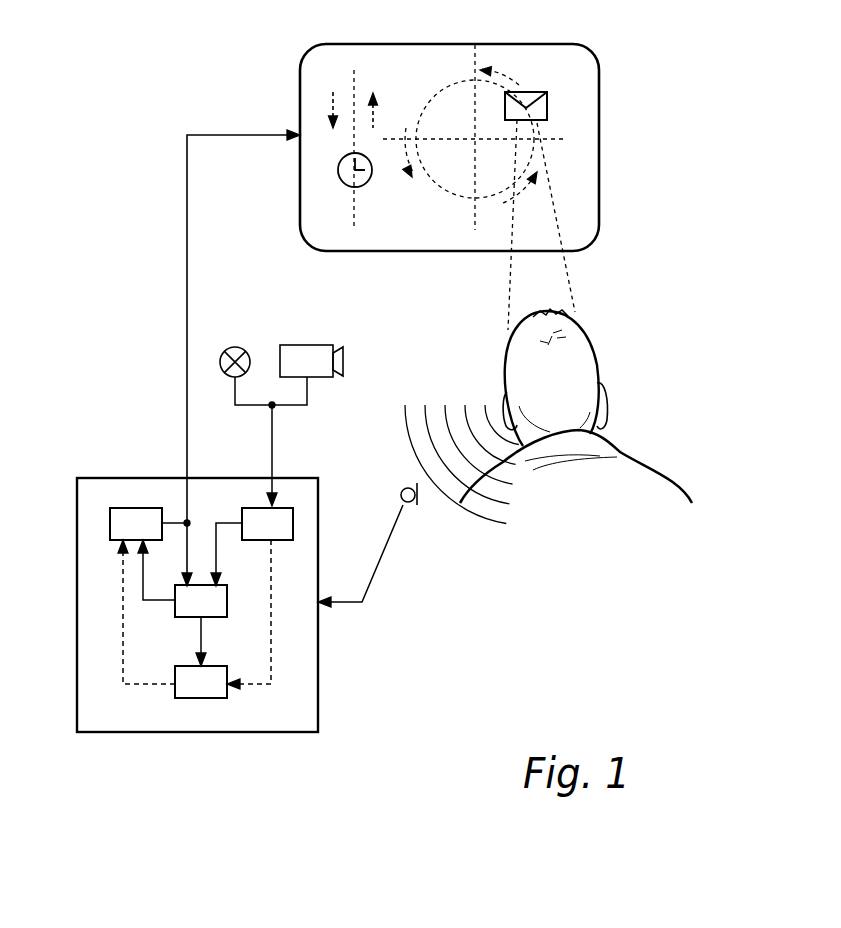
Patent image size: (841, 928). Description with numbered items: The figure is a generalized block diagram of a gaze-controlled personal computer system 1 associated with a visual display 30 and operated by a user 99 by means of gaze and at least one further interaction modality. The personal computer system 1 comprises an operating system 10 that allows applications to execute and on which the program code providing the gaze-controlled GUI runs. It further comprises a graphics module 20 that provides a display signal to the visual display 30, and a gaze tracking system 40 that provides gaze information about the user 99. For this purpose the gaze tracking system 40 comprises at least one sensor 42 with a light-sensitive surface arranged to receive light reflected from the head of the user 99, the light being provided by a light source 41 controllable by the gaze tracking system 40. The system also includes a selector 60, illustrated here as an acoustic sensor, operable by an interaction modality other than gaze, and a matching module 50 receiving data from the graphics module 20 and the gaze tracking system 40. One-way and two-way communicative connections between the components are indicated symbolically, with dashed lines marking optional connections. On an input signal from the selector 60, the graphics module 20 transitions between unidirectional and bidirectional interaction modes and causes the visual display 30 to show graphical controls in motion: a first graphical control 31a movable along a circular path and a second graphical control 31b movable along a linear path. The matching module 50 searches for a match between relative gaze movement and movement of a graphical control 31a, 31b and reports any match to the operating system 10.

The personal computer system 1 is at (108, 732).
The operating system 10 is at (198, 698).
The graphics module 20 is at (128, 508).
The visual display 30 is at (599, 102).
The first graphical control 31a is at (547, 108).
The second graphical control 31b is at (362, 186).
The gaze tracking system 40 is at (257, 508).
The light source 41 is at (238, 347).
The sensor 42 is at (313, 345).
The matching module 50 is at (175, 612).
The selector 60 is at (400, 490).
The user 99 is at (602, 348).